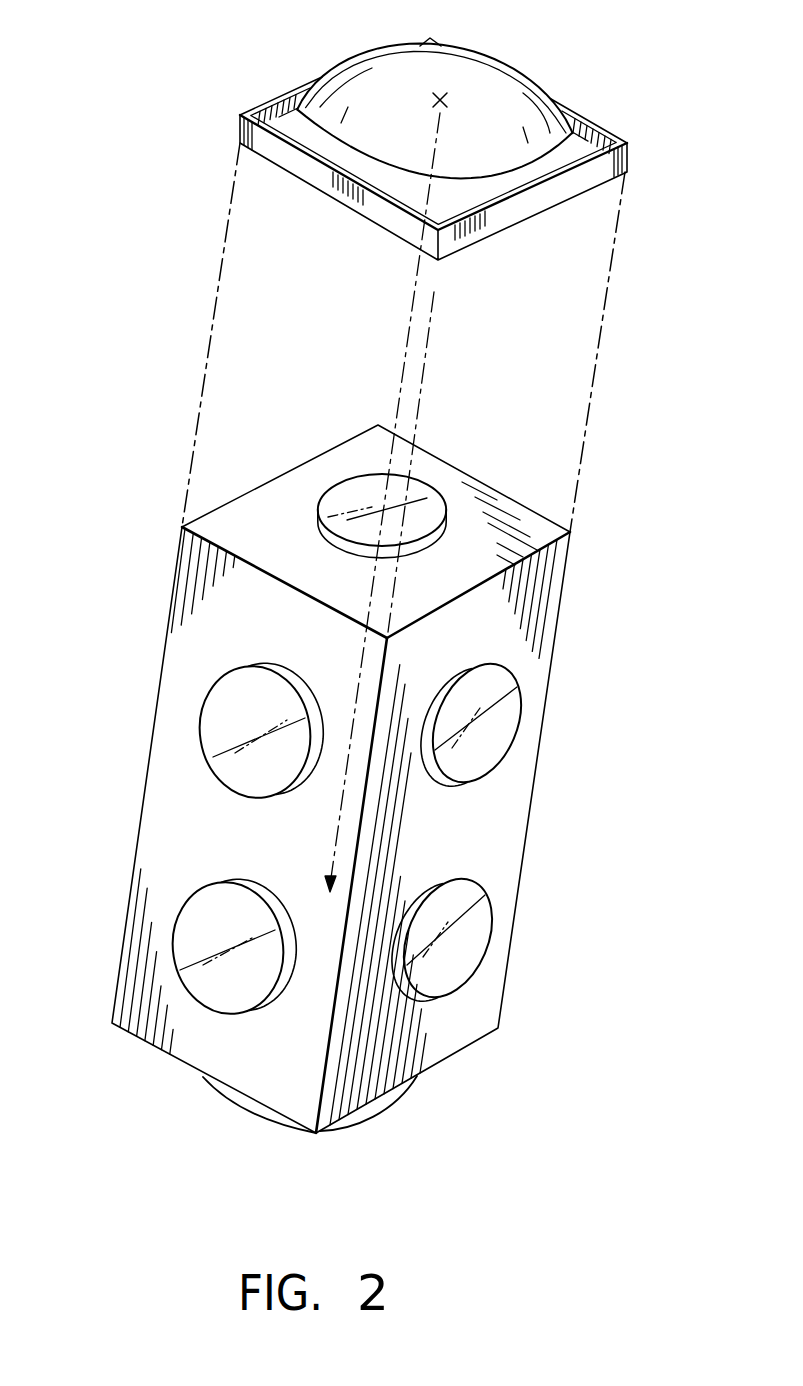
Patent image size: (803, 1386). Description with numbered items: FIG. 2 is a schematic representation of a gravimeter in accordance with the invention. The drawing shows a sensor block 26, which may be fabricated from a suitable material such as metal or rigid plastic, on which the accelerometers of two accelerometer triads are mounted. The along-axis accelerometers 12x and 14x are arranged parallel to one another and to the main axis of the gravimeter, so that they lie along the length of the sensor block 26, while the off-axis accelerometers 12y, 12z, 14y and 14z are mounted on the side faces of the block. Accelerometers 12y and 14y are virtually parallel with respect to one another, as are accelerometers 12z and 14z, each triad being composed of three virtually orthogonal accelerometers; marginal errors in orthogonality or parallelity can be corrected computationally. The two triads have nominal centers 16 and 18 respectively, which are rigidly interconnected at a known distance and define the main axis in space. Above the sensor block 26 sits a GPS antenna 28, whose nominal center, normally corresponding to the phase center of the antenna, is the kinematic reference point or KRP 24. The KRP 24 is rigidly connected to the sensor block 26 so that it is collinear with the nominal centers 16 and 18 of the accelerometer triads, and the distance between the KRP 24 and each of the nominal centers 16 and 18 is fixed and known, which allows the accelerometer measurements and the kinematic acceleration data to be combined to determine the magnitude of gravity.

The along-axis accelerometer 12x is at (425, 500).
The off-axis accelerometer 12y is at (490, 735).
The off-axis accelerometer 12z is at (247, 727).
The along-axis accelerometer 14x is at (372, 1120).
The off-axis accelerometer 14y is at (458, 942).
The off-axis accelerometer 14z is at (213, 940).
The nominal center of accelerometer triad 16 is at (360, 667).
The nominal center of accelerometer triad 18 is at (326, 872).
The kinematic reference point (KRP) 24 is at (444, 95).
The sensor block 26 is at (492, 828).
The GPS antenna 28 is at (540, 88).